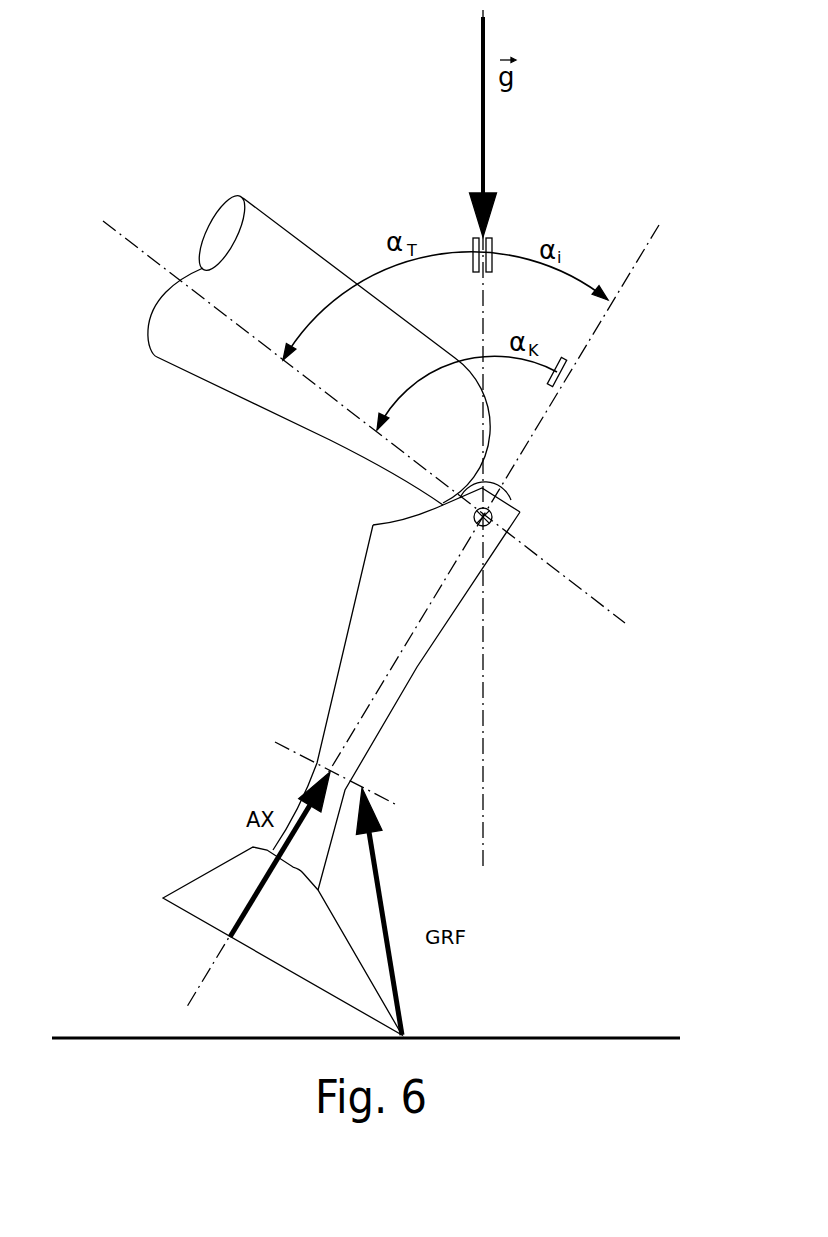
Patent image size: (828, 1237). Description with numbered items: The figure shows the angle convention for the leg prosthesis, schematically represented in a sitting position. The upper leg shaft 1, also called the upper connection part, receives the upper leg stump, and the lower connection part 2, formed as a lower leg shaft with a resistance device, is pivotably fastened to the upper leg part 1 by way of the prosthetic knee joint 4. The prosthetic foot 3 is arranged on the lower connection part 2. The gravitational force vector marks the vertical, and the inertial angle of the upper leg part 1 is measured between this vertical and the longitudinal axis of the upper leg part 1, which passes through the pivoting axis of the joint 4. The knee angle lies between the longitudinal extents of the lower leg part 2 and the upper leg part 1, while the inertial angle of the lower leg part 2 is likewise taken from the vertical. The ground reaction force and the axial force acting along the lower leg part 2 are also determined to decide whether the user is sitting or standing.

The upper leg shaft 1 is at (207, 357).
The lower connection part 2 is at (457, 592).
The prosthetic foot 3 is at (213, 882).
The joint 4 is at (510, 500).